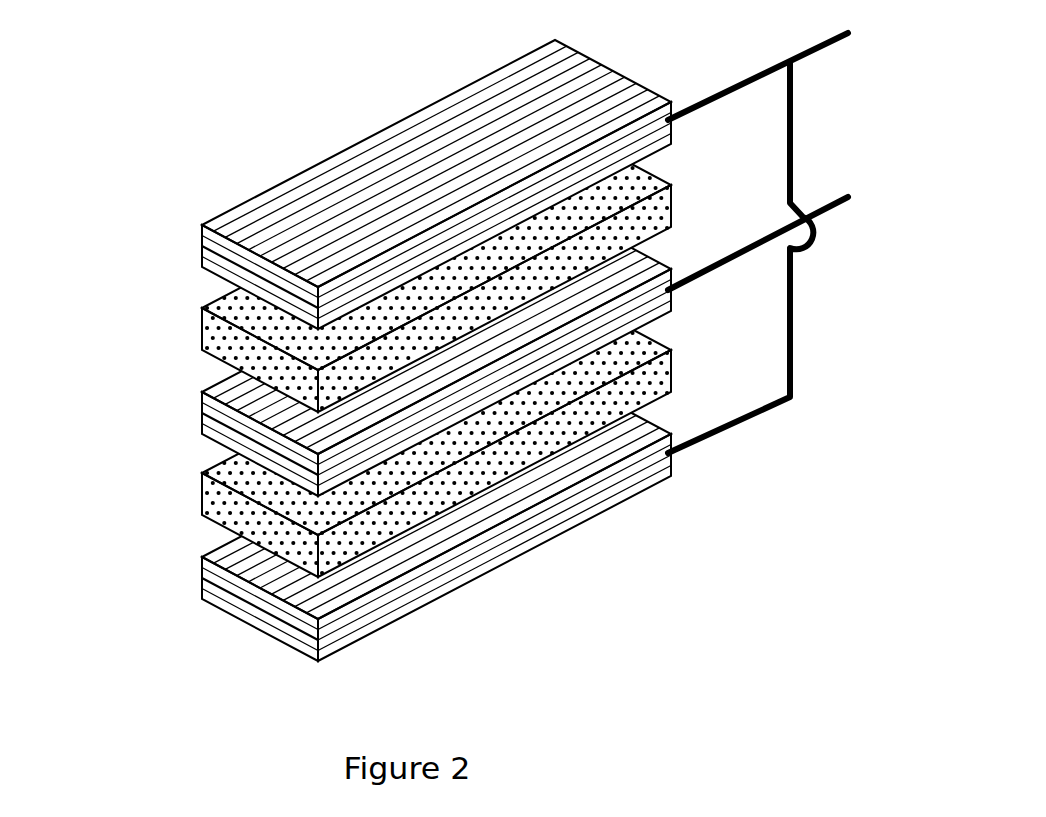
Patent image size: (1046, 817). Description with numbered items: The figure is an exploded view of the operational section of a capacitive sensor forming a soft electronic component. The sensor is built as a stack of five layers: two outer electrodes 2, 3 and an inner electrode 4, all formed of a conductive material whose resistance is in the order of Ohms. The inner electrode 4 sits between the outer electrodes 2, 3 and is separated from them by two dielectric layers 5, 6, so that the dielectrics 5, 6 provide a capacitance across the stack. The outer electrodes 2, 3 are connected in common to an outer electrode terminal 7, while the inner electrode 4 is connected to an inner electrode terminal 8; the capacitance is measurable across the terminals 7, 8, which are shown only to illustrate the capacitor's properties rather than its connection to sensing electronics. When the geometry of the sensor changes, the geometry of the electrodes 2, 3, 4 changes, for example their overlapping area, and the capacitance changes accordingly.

The outer electrode 2 is at (215, 258).
The outer electrode 3 is at (255, 608).
The inner electrode 4 is at (355, 465).
The dielectric layer 5 is at (218, 328).
The dielectric layer 6 is at (228, 508).
The outer electrode terminal 7 is at (774, 230).
The inner electrode terminal 8 is at (774, 234).